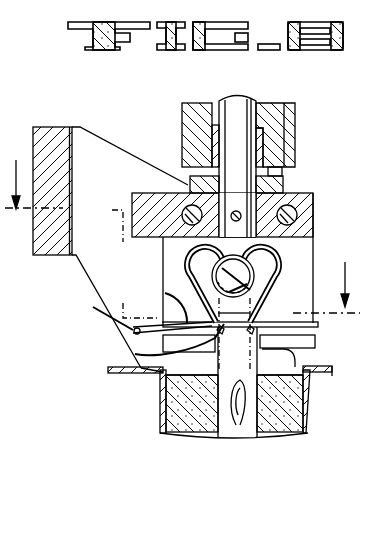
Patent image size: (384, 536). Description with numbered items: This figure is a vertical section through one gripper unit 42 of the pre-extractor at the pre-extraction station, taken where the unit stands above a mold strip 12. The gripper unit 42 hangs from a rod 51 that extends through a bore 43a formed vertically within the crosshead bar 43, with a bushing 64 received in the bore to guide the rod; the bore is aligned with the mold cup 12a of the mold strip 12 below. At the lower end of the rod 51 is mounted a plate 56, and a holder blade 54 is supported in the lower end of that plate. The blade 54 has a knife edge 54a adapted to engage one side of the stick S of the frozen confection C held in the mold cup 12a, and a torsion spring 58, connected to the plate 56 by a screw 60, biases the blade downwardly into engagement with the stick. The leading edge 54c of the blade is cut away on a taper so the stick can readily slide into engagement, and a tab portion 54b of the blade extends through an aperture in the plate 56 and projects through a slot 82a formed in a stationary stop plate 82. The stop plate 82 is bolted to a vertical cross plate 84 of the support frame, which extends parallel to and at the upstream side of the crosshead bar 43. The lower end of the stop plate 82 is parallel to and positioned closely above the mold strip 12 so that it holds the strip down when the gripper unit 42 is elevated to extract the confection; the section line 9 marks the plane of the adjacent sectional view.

The vertical cross plate 84 is at (50, 128).
The stop plate 82 is at (127, 165).
The slot 82a is at (162, 378).
The crosshead bar 43 is at (284, 104).
The bore 43a is at (284, 123).
The rod 51 is at (233, 98).
The bushing 64 is at (284, 145).
The gripper unit 42 is at (316, 194).
The plate 56 is at (297, 243).
The torsion spring 58 is at (282, 262).
The screw 60 is at (222, 267).
The holder blade 54 is at (133, 331).
The knife edge 54a is at (165, 293).
The tab portion 54b is at (135, 354).
The leading edge 54c is at (85, 314).
The mold strip 12 is at (112, 369).
The mold cup 12a is at (300, 437).
The confection C is at (186, 437).
The stick S is at (240, 440).
The section line 9- 9 is at (182, 251).